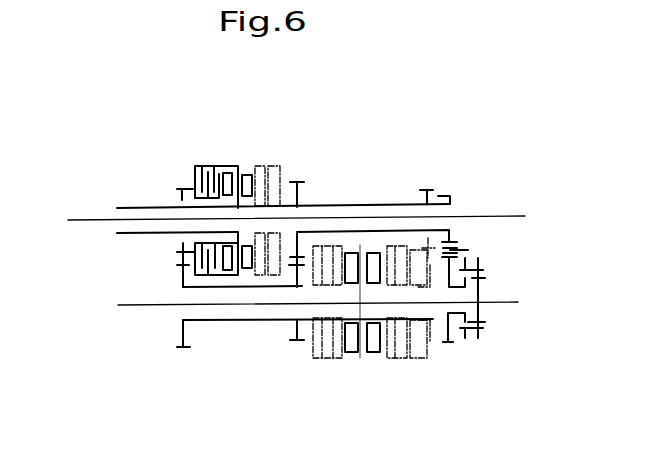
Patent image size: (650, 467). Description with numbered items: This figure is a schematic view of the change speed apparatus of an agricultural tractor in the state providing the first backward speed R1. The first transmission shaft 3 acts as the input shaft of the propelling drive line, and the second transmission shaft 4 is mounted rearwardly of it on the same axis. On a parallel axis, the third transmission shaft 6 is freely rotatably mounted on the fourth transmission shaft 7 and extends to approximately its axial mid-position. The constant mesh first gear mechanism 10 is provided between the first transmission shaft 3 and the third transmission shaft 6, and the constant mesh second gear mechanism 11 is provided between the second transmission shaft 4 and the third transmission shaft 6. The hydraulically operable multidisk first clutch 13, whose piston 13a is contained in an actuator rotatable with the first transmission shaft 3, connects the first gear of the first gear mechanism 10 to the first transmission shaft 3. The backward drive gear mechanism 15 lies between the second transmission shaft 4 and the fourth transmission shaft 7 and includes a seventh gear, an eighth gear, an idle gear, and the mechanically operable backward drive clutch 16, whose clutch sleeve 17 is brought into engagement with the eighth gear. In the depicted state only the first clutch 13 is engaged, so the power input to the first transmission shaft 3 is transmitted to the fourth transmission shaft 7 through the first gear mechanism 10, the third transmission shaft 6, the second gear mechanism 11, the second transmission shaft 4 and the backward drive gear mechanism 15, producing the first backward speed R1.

The first transmission shaft 3 is at (130, 207).
The second transmission shaft 4 is at (362, 203).
The third transmission shaft 6 is at (227, 320).
The fourth transmission shaft 7 is at (150, 305).
The first gear mechanism 10 is at (272, 258).
The second gear mechanism 11 is at (305, 246).
The first clutch 13 is at (208, 154).
The piston 13a is at (230, 165).
The backward drive gear mechanism 15 is at (464, 237).
The backward drive clutch 16 is at (469, 348).
The clutch sleeve 17 is at (460, 364).
The first backward speed R1 is at (388, 153).